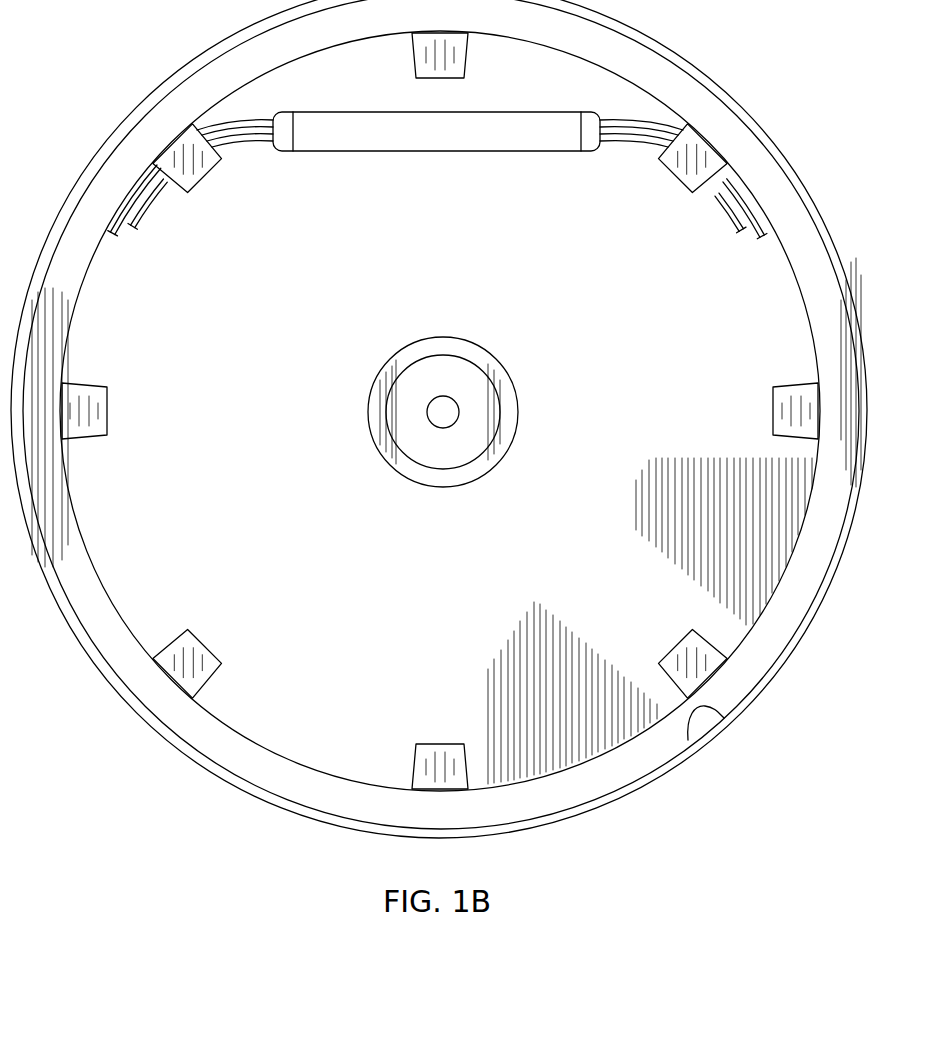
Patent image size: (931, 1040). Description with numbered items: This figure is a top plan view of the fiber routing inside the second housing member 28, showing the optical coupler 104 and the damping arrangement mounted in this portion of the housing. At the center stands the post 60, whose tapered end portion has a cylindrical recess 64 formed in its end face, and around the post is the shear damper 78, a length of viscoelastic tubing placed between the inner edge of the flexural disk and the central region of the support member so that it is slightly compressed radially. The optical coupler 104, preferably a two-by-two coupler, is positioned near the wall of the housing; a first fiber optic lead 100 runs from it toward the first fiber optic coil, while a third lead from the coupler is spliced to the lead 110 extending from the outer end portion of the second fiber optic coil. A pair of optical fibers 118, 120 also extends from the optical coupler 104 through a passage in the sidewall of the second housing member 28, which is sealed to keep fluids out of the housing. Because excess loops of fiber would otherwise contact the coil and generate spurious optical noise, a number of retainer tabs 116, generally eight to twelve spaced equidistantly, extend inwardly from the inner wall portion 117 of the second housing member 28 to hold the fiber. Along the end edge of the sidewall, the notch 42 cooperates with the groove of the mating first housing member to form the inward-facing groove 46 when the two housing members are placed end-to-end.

The second housing member 28 is at (763, 693).
The notch 42 is at (603, 778).
The groove 46 is at (724, 718).
The post 60 is at (453, 468).
The cylindrical recess 64 is at (432, 416).
The shear damper 78 is at (518, 410).
The first fiber optic lead 100 is at (120, 232).
The optical coupler 104 is at (453, 150).
The lead 110 is at (158, 200).
The retainer tabs 116 is at (205, 648).
The inner wall portion 117 is at (77, 303).
The optical fiber 118 is at (727, 207).
The optical fiber 120 is at (737, 218).